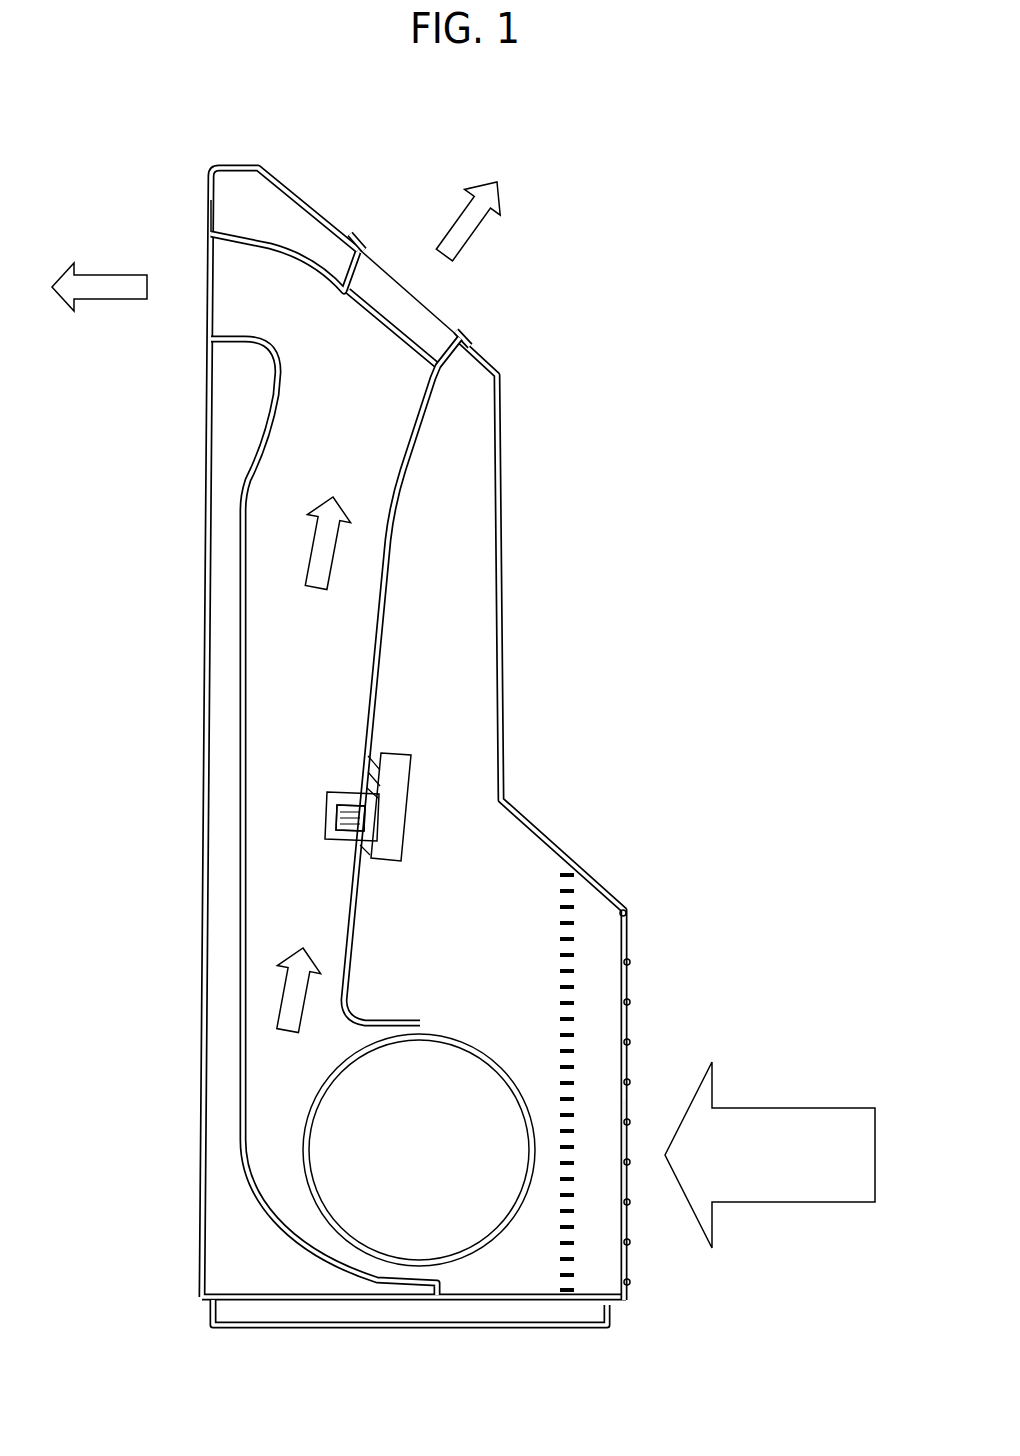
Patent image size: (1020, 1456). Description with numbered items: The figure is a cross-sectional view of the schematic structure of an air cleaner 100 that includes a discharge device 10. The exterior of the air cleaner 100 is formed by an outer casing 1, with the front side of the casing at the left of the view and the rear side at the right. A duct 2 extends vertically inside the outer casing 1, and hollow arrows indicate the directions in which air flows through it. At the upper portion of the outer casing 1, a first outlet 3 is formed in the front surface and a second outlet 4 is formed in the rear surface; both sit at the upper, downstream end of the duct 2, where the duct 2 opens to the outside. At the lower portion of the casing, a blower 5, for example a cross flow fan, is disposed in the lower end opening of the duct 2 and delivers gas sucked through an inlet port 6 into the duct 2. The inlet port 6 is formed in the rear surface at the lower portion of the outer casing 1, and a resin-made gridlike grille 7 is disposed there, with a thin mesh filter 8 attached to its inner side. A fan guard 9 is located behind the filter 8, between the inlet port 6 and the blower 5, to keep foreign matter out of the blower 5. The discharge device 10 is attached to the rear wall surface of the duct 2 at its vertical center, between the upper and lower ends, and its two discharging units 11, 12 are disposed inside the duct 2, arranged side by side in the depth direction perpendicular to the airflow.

The air cleaner 100 is at (391, 746).
The outer casing 1 is at (207, 588).
The duct 2 is at (343, 613).
The first outlet 3 is at (207, 256).
The second outlet 4 is at (430, 308).
The blower 5 is at (496, 1246).
The inlet port 6 is at (649, 1240).
The grille 7 is at (631, 962).
The filter 8 is at (622, 1024).
The fan guard 9 is at (570, 907).
The discharge device 10 is at (395, 775).
The discharging unit 11 is at (348, 816).
The discharging unit 12 is at (350, 818).